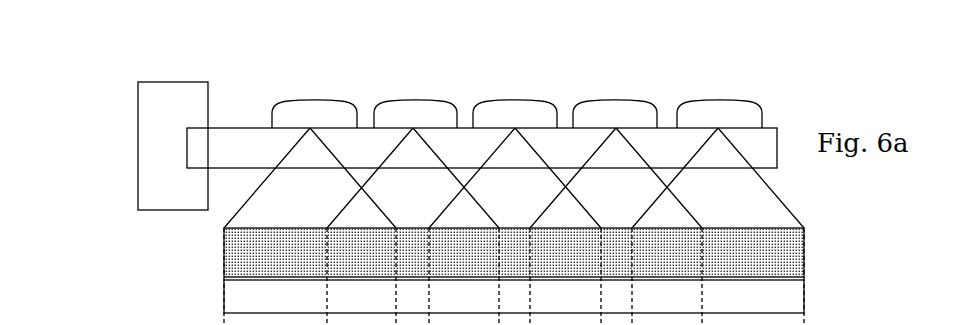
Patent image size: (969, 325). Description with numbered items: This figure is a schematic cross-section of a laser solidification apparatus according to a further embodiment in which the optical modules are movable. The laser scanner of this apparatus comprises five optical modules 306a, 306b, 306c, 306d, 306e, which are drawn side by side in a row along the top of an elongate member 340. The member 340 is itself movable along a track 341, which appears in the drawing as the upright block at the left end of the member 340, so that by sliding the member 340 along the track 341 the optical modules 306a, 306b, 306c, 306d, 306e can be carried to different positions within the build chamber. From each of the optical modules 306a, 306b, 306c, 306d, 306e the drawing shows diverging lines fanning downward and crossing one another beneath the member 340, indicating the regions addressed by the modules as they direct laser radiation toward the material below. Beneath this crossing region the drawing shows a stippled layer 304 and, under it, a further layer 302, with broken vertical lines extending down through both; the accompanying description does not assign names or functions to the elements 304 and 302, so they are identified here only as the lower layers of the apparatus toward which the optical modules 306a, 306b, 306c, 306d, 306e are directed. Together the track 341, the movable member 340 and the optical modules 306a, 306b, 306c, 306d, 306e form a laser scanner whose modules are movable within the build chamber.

The track 341 is at (165, 118).
The member 340 is at (805, 175).
The optical module 306a is at (320, 98).
The optical module 306b is at (410, 98).
The optical module 306c is at (518, 98).
The optical module 306d is at (613, 98).
The optical module 306e is at (710, 98).
The diffuser layer 304 is at (281, 257).
The display panel / substrate 302 is at (745, 294).